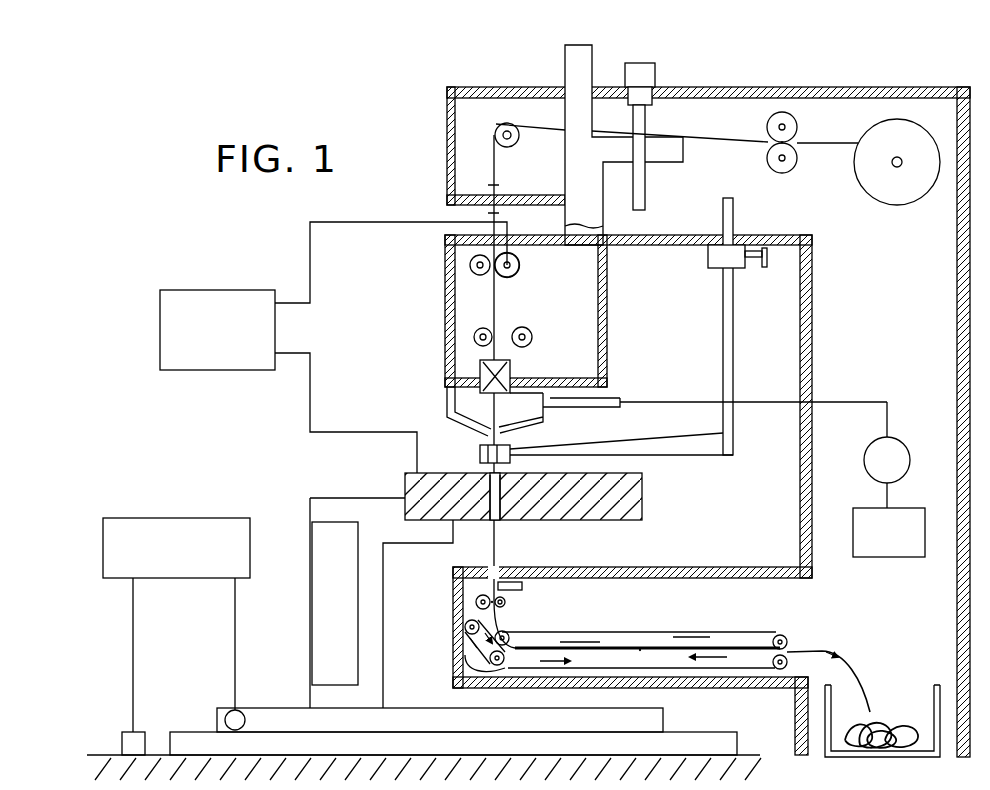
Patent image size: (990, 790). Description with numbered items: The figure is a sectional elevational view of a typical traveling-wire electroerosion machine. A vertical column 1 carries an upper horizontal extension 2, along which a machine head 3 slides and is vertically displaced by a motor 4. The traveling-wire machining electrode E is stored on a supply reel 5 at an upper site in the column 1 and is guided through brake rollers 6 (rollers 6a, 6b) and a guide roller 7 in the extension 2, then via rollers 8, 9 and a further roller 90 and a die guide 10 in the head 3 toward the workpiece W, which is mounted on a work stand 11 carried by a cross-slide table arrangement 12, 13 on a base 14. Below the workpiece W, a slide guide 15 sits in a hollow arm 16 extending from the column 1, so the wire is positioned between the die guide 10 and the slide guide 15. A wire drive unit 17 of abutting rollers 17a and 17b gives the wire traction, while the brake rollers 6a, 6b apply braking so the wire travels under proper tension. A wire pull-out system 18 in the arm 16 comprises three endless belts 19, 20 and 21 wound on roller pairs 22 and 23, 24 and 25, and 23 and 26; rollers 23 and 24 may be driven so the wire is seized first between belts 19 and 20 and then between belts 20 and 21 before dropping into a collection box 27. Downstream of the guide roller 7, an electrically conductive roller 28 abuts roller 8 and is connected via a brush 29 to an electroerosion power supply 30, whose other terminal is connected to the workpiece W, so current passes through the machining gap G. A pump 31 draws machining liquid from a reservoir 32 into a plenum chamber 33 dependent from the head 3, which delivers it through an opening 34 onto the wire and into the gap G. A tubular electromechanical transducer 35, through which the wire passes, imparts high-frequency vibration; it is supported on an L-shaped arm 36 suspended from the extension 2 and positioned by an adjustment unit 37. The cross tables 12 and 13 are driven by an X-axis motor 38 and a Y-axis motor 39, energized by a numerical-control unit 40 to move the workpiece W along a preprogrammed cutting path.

The vertical column 1 is at (970, 367).
The upper horizontal extension 2 is at (532, 87).
The machine head 3 is at (445, 290).
The motor 4 is at (655, 72).
The supply reel 5 is at (920, 183).
The brake rollers 6 is at (738, 171).
The brake roller 6a is at (782, 114).
The brake roller 6b is at (795, 160).
The guide roller 7 is at (497, 129).
The roller 8 is at (470, 265).
The roller 9 is at (474, 337).
The guide roller 90 is at (532, 337).
The die guide 10 is at (480, 388).
The work stand 11 is at (325, 508).
The cross-slide table 12 is at (272, 708).
The cross-slide table 13 is at (180, 732).
The base 14 is at (100, 755).
The slide guide 15 is at (512, 581).
The hollow arm 16 is at (450, 628).
The wire drive unit 17 is at (533, 624).
The drive roller 17a is at (477, 597).
The drive roller 17b is at (505, 601).
The wire pull-out system 18 is at (701, 611).
The endless belt 19 is at (470, 638).
The endless belt 20 is at (636, 632).
The endless belt 21 is at (730, 668).
The roller 22 is at (812, 378).
The roller 23 is at (463, 665).
The roller 24 is at (518, 650).
The roller 25 is at (782, 634).
The roller 26 is at (788, 660).
The collection box 27 is at (946, 690).
The electrically conductive roller 28 is at (510, 277).
The brush 29 is at (519, 263).
The electroerosion power supply 30 is at (225, 290).
The pump 31 is at (905, 445).
The reservoir 32 is at (905, 508).
The plenum chamber 33 is at (523, 412).
The liquid delivery opening 34 is at (466, 437).
The tubular electromechanical transducer 35 is at (480, 455).
The L-shaped arm 36 is at (728, 456).
The position adjustment unit 37 is at (716, 235).
The X-axis motor 38 is at (228, 711).
The Y-axis motor 39 is at (130, 732).
The numerical-control unit 40 is at (178, 518).
The traveling-wire machining electrode E is at (832, 143).
The workpiece W is at (407, 483).
The machining gap G is at (490, 520).